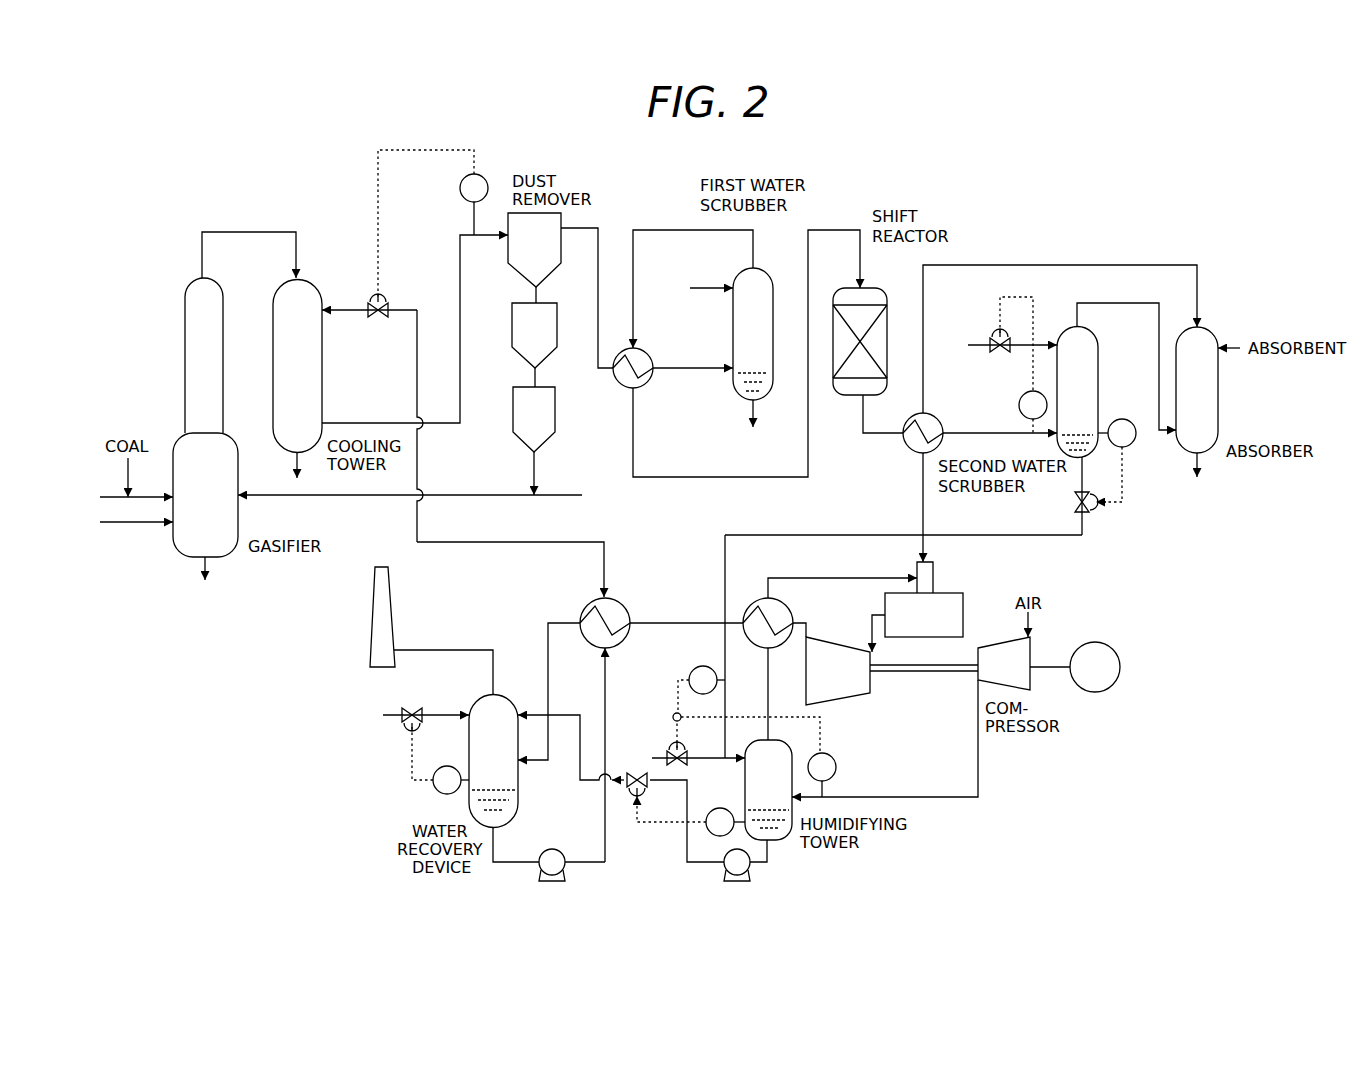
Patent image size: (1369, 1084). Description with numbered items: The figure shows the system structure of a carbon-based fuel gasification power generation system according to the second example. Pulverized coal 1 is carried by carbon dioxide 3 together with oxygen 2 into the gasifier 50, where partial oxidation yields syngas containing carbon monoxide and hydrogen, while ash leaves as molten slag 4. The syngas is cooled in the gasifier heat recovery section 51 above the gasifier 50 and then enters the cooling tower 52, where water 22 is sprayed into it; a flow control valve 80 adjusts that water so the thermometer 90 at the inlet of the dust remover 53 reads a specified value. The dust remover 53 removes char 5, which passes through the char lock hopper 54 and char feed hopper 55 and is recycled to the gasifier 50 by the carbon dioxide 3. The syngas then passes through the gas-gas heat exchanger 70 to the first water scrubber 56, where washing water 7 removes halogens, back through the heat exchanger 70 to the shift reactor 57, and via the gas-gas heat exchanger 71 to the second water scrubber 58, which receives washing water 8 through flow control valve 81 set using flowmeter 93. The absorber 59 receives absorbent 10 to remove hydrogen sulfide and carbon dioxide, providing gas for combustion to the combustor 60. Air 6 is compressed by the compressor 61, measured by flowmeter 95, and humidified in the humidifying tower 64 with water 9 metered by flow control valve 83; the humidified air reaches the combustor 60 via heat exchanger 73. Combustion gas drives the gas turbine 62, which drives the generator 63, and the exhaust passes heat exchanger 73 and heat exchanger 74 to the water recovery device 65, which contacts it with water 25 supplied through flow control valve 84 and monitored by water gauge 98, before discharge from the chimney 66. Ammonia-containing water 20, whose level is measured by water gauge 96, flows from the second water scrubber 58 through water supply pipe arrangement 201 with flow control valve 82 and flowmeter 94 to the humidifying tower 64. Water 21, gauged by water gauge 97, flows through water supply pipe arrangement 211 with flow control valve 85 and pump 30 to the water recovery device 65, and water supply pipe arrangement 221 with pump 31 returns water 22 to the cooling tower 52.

The coal 1 is at (122, 429).
The oxygen 2 is at (86, 543).
The carbon dioxide 3 is at (68, 482).
The slag 4 is at (208, 573).
The char 5 is at (495, 452).
The air 6 is at (1048, 604).
The washing water 7 is at (702, 292).
The washing water 8 is at (960, 321).
The water 9 is at (638, 739).
The absorbent 10 is at (1287, 332).
The water 20 is at (1050, 538).
The water 21 is at (582, 778).
The water 22 is at (500, 543).
The water 25 is at (354, 727).
The pump 30 is at (742, 881).
The pump 31 is at (557, 881).
The gasifier 50 is at (216, 523).
The gasifier heat recovery section 51 is at (217, 386).
The cooling tower 52 is at (308, 386).
The dust remover 53 is at (546, 249).
The char lock hopper 54 is at (546, 340).
The char feed hopper 55 is at (545, 422).
The first water scrubber 56 is at (762, 266).
The shift reactor 57 is at (875, 287).
The second water scrubber 58 is at (1054, 443).
The absorber 59 is at (1208, 402).
The combustor 60 is at (943, 589).
The compressor 61 is at (1016, 674).
The gas turbine 62 is at (848, 679).
The generator 63 is at (1113, 687).
The humidifying tower 64 is at (786, 840).
The water recovery device 65 is at (504, 750).
The chimney 66 is at (371, 642).
The gas-gas heat exchanger 70 is at (641, 385).
The gas-gas heat exchanger 71 is at (916, 449).
The heat exchanger 73 is at (758, 603).
The heat exchanger 74 is at (586, 606).
The flow control valve 80 is at (374, 324).
The flow control valve 81 is at (1005, 351).
The flow control valve 82 is at (1093, 512).
The flow control valve 83 is at (672, 747).
The flow control valve 84 is at (415, 708).
The flow control valve 85 is at (647, 790).
The thermometer 90 is at (485, 178).
The flowmeter 93 is at (1019, 407).
The flowmeter 94 is at (701, 671).
The flowmeter 95 is at (836, 767).
The water gauge 96 is at (1132, 443).
The water gauge 97 is at (722, 808).
The water gauge 98 is at (433, 790).
The water supply pipe arrangement 201 is at (978, 542).
The water supply pipe arrangement 211 is at (564, 714).
The water supply pipe arrangement 221 is at (536, 545).